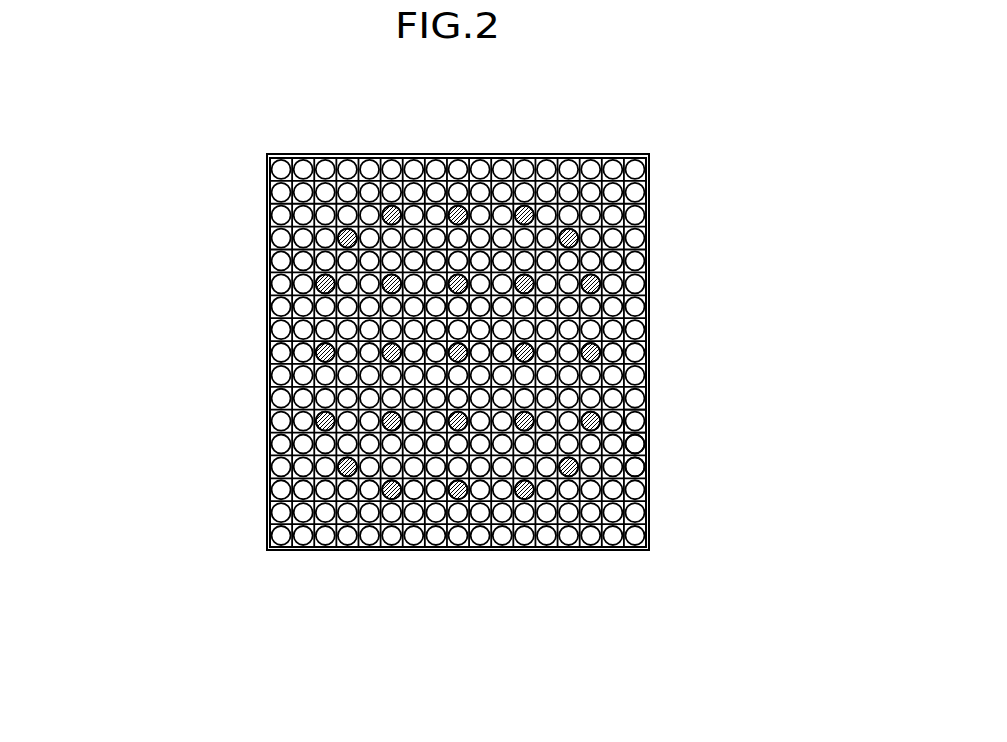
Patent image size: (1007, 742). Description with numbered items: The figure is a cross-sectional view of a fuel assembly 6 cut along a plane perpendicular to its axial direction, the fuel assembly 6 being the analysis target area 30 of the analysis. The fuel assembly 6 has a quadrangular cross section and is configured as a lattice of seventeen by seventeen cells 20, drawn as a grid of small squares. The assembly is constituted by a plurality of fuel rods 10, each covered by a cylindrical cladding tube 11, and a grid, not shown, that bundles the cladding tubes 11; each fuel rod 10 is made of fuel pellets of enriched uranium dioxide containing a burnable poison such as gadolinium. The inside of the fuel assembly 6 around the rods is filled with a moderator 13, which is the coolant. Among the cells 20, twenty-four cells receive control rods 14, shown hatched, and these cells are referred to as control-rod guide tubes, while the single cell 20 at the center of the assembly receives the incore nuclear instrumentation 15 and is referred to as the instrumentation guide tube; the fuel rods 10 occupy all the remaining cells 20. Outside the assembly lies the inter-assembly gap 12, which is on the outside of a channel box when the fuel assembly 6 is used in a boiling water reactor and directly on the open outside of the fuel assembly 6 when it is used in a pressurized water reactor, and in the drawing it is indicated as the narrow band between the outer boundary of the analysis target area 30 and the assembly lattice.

The fuel assembly 6 is at (657, 218).
The fuel rod 10 is at (637, 397).
The cladding tube 11 is at (646, 443).
The inter-assembly gap 12 is at (584, 156).
The moderator 13 is at (650, 430).
The control rod 14 is at (648, 305).
The incore nuclear instrumentation 15 is at (452, 345).
The cell 20 is at (462, 178).
The analysis target area 30 is at (591, 558).